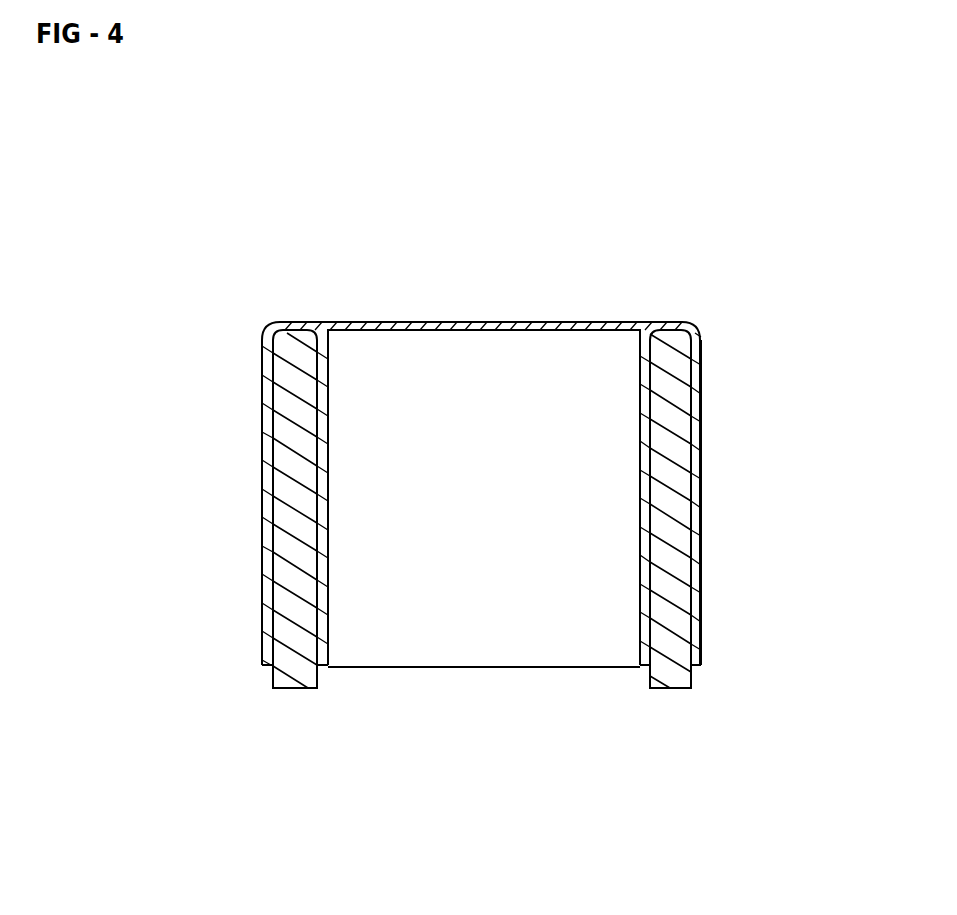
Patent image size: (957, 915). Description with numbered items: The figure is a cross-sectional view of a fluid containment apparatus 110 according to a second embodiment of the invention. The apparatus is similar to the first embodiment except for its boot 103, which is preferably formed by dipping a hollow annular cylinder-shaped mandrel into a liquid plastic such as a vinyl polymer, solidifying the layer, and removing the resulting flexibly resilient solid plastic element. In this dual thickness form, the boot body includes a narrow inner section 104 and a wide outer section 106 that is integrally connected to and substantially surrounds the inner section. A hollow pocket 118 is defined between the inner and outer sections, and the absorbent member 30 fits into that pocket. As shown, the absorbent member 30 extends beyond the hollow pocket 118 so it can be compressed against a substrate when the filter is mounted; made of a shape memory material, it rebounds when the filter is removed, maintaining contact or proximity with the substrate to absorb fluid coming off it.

The boot 103 is at (663, 308).
The narrow inner section 104 is at (329, 416).
The wide outer section 106 is at (262, 478).
The hollow pocket 118 is at (291, 377).
The absorbent member 30 is at (287, 690).
The fluid containment apparatus 110 is at (722, 690).